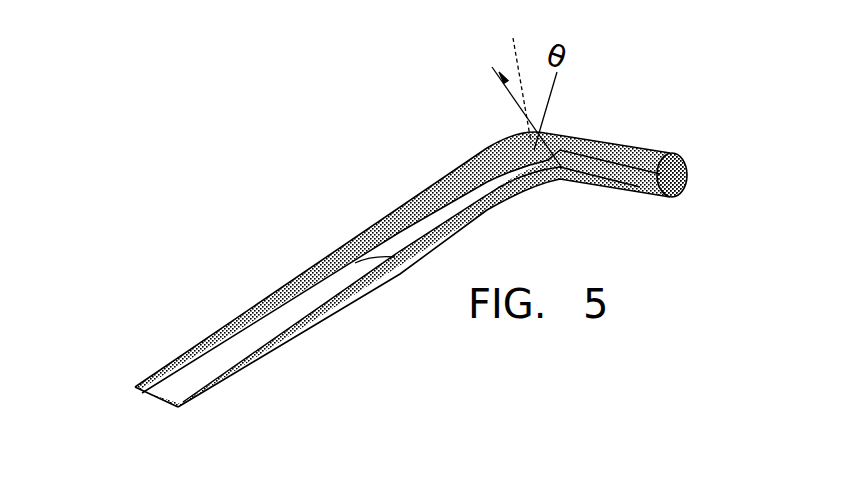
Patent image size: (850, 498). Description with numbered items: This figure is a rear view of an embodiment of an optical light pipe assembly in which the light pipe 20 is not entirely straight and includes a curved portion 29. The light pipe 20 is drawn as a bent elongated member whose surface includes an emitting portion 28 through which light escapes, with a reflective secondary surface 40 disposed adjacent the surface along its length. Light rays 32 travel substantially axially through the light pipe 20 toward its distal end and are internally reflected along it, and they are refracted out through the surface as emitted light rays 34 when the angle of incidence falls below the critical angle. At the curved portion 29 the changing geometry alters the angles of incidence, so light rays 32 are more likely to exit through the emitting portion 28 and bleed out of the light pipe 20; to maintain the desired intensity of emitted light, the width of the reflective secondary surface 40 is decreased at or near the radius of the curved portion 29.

The light pipe 20 is at (681, 197).
The emitting portion 28 is at (458, 163).
The curved portion 29 is at (480, 147).
The light rays 32 is at (688, 172).
The emitted light rays 34 is at (584, 155).
The reflective secondary surface 40 is at (306, 297).